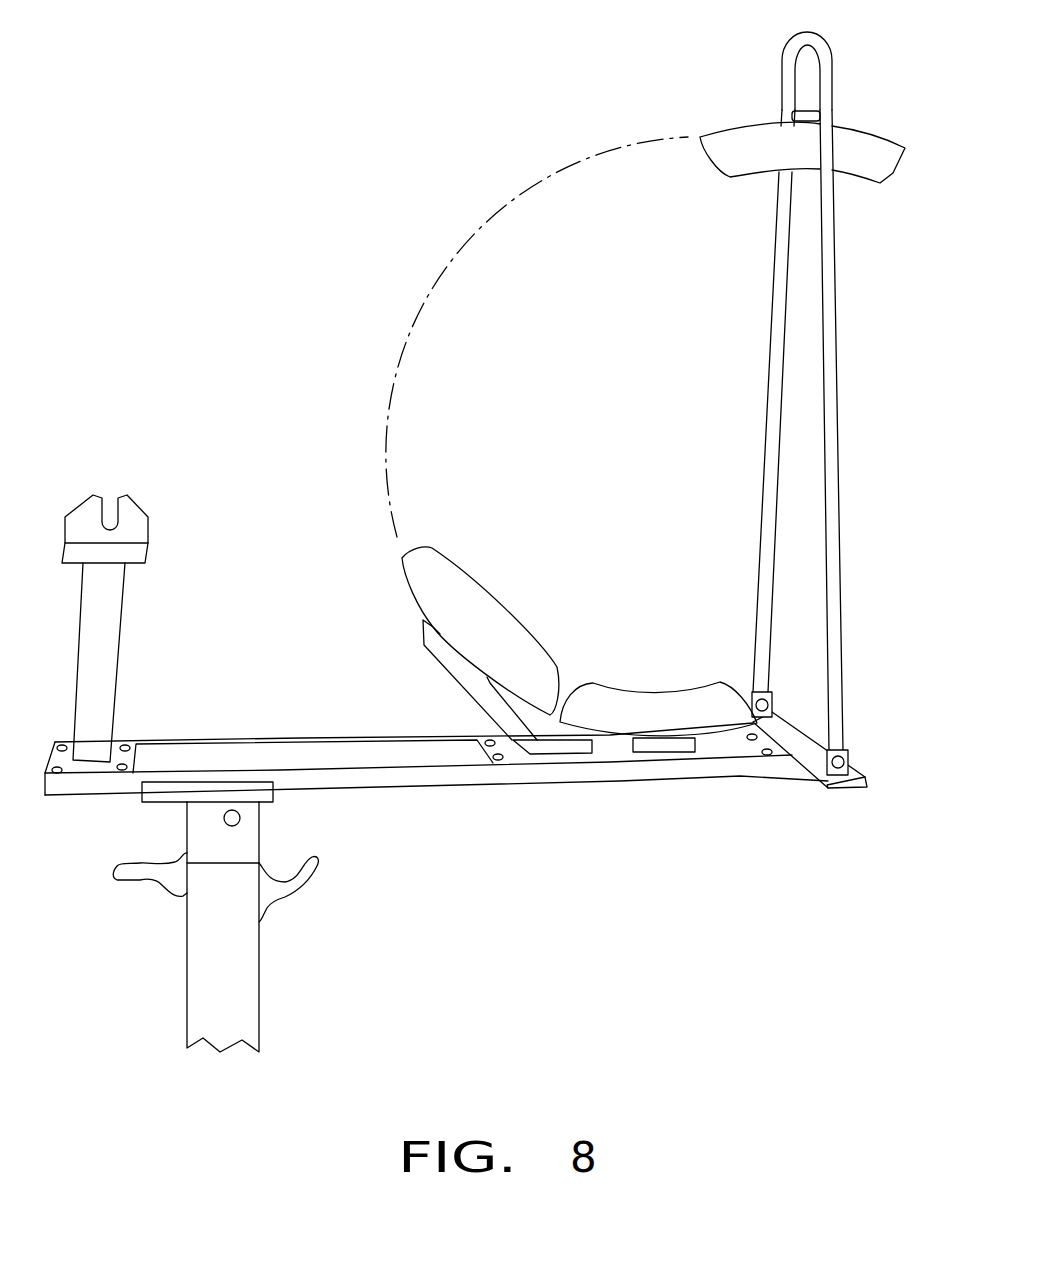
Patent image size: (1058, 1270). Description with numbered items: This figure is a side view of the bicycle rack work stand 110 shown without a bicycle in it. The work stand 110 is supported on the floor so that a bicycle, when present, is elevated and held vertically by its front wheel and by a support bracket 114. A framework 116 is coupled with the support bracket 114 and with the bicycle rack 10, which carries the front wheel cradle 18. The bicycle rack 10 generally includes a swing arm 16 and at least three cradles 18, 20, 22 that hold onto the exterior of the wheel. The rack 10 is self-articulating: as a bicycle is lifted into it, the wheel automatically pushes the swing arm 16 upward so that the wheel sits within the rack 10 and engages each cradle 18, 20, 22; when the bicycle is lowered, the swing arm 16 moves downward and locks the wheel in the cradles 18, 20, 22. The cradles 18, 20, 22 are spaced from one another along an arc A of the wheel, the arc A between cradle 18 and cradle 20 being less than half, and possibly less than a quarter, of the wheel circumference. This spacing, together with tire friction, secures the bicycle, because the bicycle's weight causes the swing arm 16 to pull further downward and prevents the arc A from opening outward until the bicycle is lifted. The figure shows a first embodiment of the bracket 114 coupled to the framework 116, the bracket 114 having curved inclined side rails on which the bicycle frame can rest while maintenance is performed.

The bicycle rack 10 is at (663, 403).
The swing arm 16 is at (830, 252).
The cradle 18 is at (645, 697).
The cradle 20 is at (457, 583).
The cradle 22 is at (855, 142).
The arc A is at (440, 273).
The bicycle rack work stand 110 is at (456, 684).
The support bracket 114 is at (172, 531).
The framework 116 is at (273, 720).